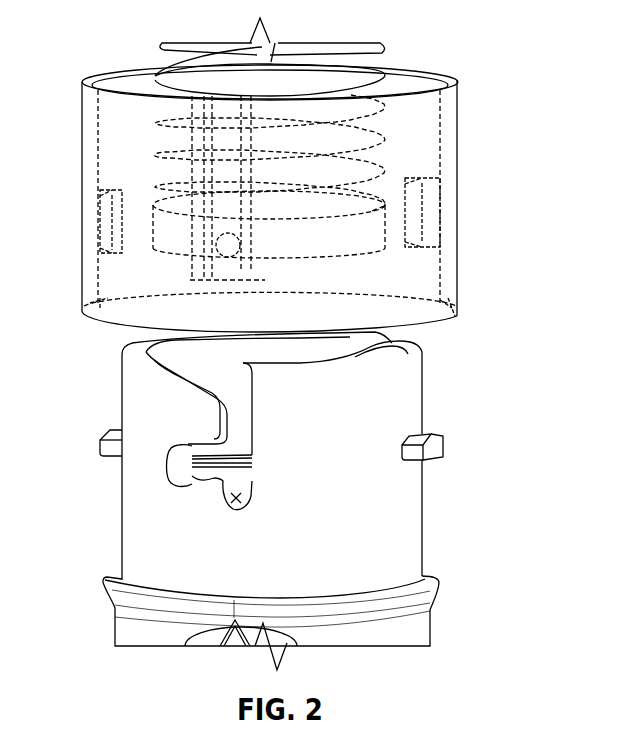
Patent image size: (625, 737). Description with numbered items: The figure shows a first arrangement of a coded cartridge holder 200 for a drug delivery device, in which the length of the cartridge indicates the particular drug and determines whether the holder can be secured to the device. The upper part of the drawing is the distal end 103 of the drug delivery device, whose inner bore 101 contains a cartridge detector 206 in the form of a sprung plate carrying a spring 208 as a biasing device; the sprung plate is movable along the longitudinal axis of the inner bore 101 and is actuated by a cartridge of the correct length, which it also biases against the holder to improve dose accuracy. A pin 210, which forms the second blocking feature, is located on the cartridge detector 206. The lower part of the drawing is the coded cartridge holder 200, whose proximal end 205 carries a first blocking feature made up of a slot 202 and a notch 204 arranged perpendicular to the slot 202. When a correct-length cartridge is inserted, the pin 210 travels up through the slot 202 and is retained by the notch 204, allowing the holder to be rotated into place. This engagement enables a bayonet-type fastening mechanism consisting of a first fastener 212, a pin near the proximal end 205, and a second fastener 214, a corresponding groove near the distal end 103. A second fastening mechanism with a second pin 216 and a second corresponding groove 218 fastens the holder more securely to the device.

The inner bore 101 is at (135, 86).
The distal end 103 is at (442, 318).
The coded cartridge holder 200 is at (518, 497).
The slot 202 is at (232, 507).
The notch 204 is at (188, 447).
The proximal end 205 is at (400, 536).
The cartridge detector 206 is at (368, 236).
The spring 208 is at (368, 86).
The pin 210 is at (228, 245).
The first fastener 212 is at (440, 447).
The second fastener 214 is at (440, 208).
The second pin 216 is at (108, 438).
The second corresponding groove 218 is at (100, 218).